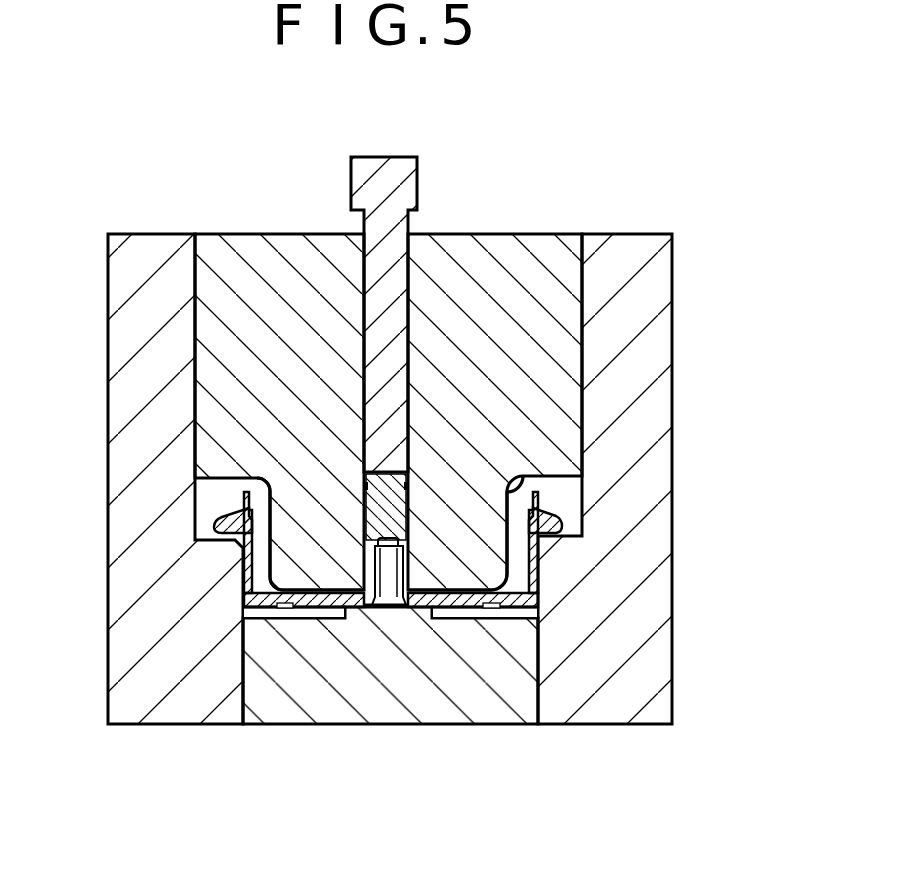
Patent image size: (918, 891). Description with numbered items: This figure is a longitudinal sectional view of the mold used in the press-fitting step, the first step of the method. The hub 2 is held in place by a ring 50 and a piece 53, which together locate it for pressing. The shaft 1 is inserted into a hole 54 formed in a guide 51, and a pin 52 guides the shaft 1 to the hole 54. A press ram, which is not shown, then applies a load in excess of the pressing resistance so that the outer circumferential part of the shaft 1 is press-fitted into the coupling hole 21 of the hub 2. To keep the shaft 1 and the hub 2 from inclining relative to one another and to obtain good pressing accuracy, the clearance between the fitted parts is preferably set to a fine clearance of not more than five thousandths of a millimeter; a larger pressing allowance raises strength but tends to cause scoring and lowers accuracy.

The shaft 1 is at (387, 512).
The hub 2 is at (457, 607).
The coupling hole 21 is at (415, 607).
The ring 50 is at (653, 468).
The guide 51 is at (483, 287).
The pin 52 is at (375, 189).
The piece 53 is at (357, 687).
The hole 54 is at (421, 531).